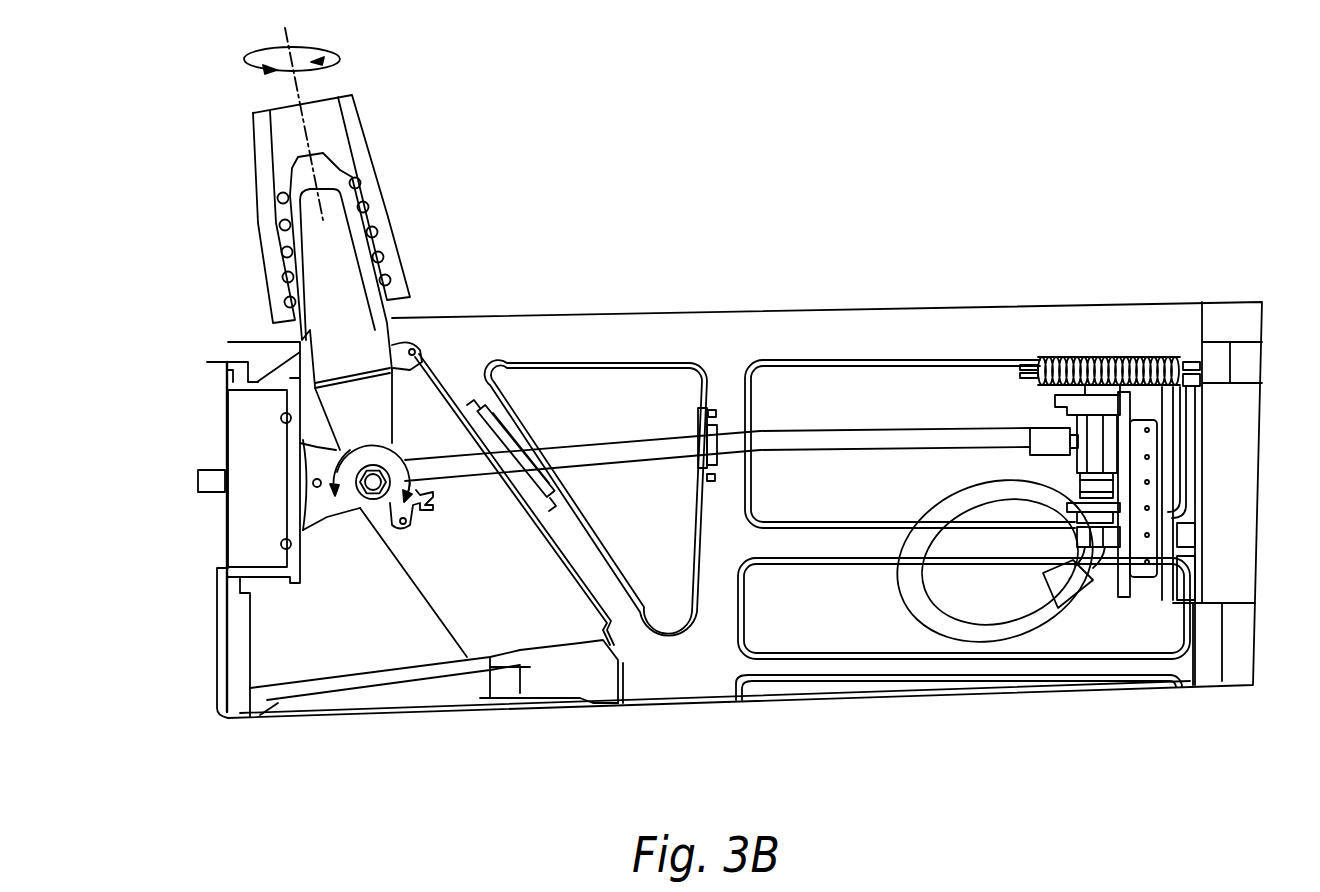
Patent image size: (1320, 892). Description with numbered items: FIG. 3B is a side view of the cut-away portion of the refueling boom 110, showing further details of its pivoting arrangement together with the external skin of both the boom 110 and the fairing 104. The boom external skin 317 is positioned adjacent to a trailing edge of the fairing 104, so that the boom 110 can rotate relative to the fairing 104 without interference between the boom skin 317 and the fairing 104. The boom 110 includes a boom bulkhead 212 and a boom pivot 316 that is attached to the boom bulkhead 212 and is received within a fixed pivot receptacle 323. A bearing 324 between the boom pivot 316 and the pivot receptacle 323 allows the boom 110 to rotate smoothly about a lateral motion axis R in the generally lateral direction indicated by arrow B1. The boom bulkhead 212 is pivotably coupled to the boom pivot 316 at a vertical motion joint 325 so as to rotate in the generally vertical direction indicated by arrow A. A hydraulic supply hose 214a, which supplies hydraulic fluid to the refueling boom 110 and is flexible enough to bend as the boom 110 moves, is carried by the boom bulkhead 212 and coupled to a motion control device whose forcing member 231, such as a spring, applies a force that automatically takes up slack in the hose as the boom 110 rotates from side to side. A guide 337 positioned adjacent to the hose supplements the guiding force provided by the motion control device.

The fairing 104 is at (990, 697).
The refueling boom 110 is at (542, 703).
The boom bulkhead 212 is at (215, 663).
The hydraulic supply hose 214a is at (950, 435).
The forcing member 231 is at (1152, 358).
The boom pivot 316 is at (292, 190).
The boom external skin 317 is at (422, 710).
The fixed pivot receptacle 323 is at (363, 137).
The bearing 324 is at (284, 248).
The vertical motion joint 325 is at (320, 466).
The guide 337 is at (517, 440).
The arrow A is at (390, 453).
The arrow B1 is at (318, 50).
The lateral motion axis R is at (310, 96).